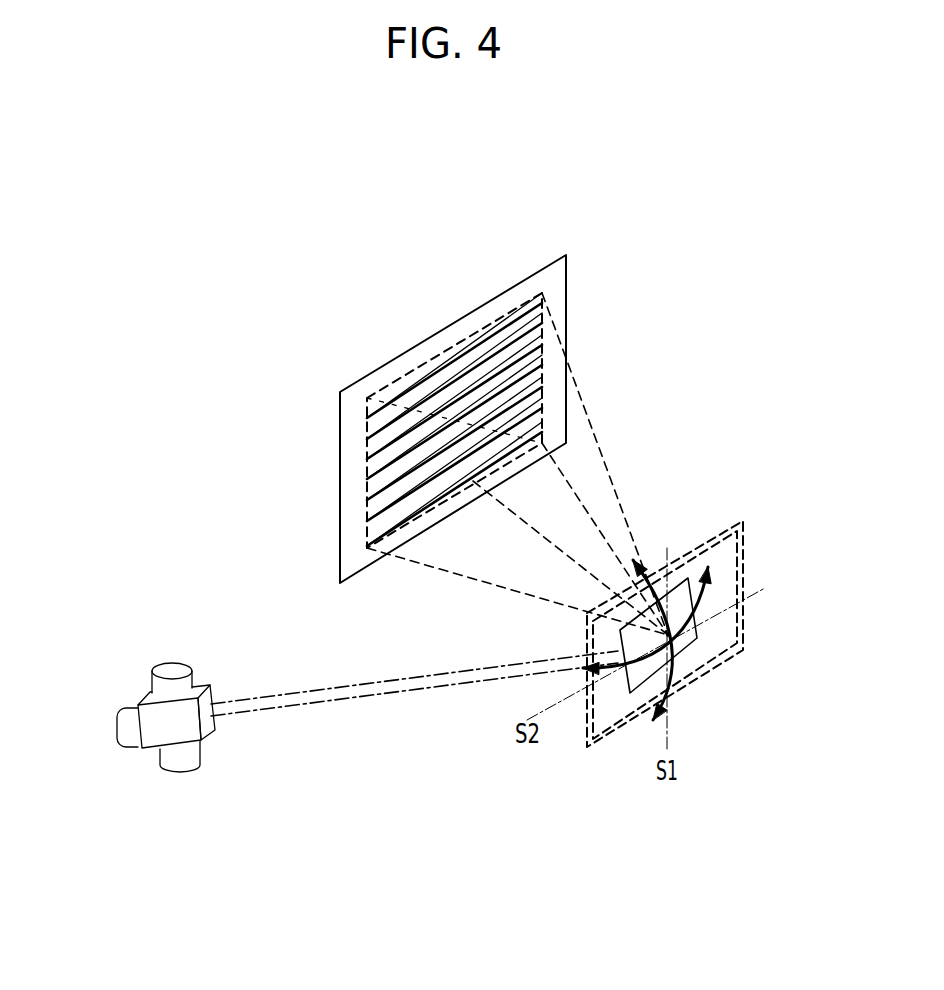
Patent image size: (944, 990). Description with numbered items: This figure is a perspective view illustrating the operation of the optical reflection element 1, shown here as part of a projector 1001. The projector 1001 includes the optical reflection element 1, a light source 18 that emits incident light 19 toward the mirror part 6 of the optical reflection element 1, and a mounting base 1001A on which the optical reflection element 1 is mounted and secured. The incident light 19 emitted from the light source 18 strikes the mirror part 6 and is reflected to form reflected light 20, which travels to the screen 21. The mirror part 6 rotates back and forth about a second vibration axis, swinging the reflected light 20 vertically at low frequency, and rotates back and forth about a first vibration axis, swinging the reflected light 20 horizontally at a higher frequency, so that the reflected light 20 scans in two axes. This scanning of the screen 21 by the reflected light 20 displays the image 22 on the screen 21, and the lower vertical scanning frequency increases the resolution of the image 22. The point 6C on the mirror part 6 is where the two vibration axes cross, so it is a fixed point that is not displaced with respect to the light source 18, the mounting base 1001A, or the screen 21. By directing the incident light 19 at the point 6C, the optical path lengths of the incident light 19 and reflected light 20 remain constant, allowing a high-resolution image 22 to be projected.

The optical reflection element 1 is at (671, 640).
The mirror part 6 is at (668, 635).
The point 6C is at (668, 635).
The light source 18 is at (173, 733).
The incident light 19 is at (372, 692).
The reflected light 20 is at (593, 430).
The screen 21 is at (348, 422).
The image 22 is at (448, 385).
The projector 1001 is at (671, 535).
The mounting base 1001A is at (710, 673).